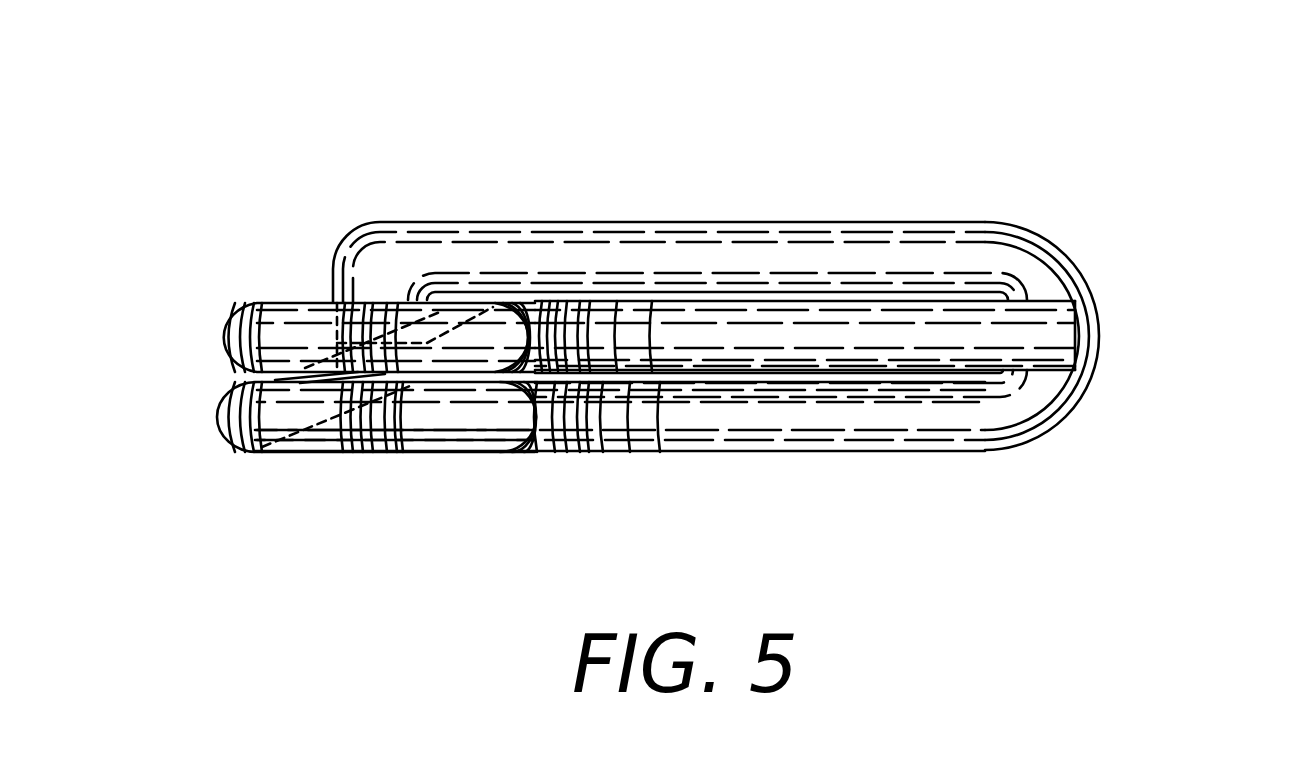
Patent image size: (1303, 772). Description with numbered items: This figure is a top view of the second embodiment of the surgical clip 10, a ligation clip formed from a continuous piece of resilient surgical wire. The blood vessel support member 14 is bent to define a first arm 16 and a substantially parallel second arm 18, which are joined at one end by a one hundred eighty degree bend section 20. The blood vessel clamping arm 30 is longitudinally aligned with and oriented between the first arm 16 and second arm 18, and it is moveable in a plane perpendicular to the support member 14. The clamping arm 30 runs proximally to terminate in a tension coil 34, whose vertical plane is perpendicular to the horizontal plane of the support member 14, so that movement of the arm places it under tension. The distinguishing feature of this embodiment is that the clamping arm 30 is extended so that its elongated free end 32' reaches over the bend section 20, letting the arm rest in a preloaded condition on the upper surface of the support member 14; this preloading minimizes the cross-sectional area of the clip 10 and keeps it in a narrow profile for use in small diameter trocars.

The surgical clip 10 is at (940, 188).
The blood vessel support member 14 is at (1093, 337).
The first arm 16 is at (571, 221).
The second arm 18 is at (665, 452).
The bend section 20 is at (1080, 358).
The clamping arm 30 is at (1063, 320).
The elongated free end 32' is at (909, 350).
The tension coil 34 is at (218, 335).